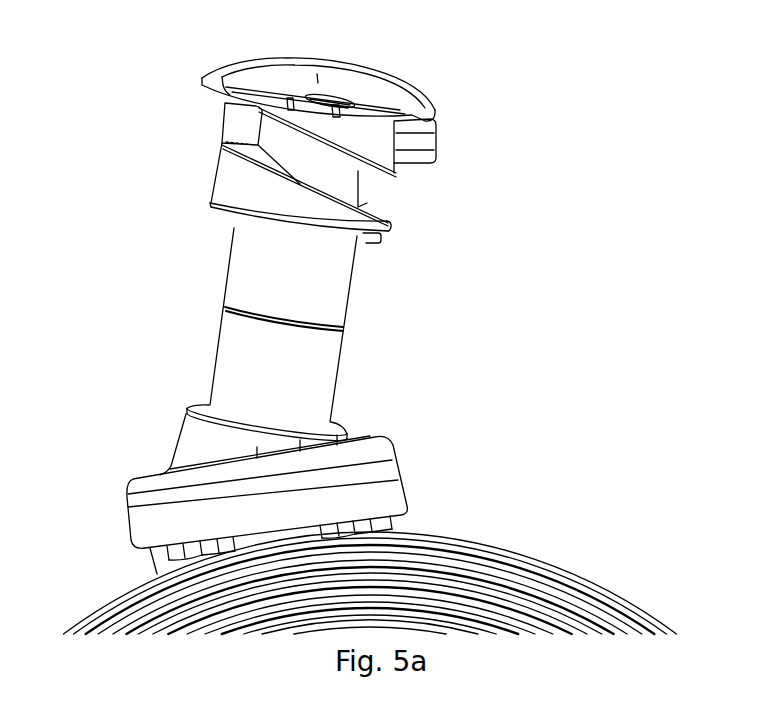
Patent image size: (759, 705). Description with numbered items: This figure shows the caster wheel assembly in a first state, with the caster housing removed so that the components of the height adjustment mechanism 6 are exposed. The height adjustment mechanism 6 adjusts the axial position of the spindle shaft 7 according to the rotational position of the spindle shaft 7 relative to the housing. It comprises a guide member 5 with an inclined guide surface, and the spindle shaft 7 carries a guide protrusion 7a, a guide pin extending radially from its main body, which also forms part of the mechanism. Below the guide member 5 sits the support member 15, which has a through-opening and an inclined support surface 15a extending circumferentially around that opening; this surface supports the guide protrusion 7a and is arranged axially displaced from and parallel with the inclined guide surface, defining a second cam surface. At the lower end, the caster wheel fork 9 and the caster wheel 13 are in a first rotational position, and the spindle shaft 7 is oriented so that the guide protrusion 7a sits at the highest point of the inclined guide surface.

The guide member 5 is at (375, 145).
The height adjustment mechanism 6 is at (175, 89).
The spindle shaft 7 is at (342, 189).
The guide protrusion 7a is at (223, 127).
The caster wheel fork 9 is at (398, 458).
The caster wheel 13 is at (532, 572).
The support member 15 is at (228, 200).
The inclined support surface 15a is at (237, 147).